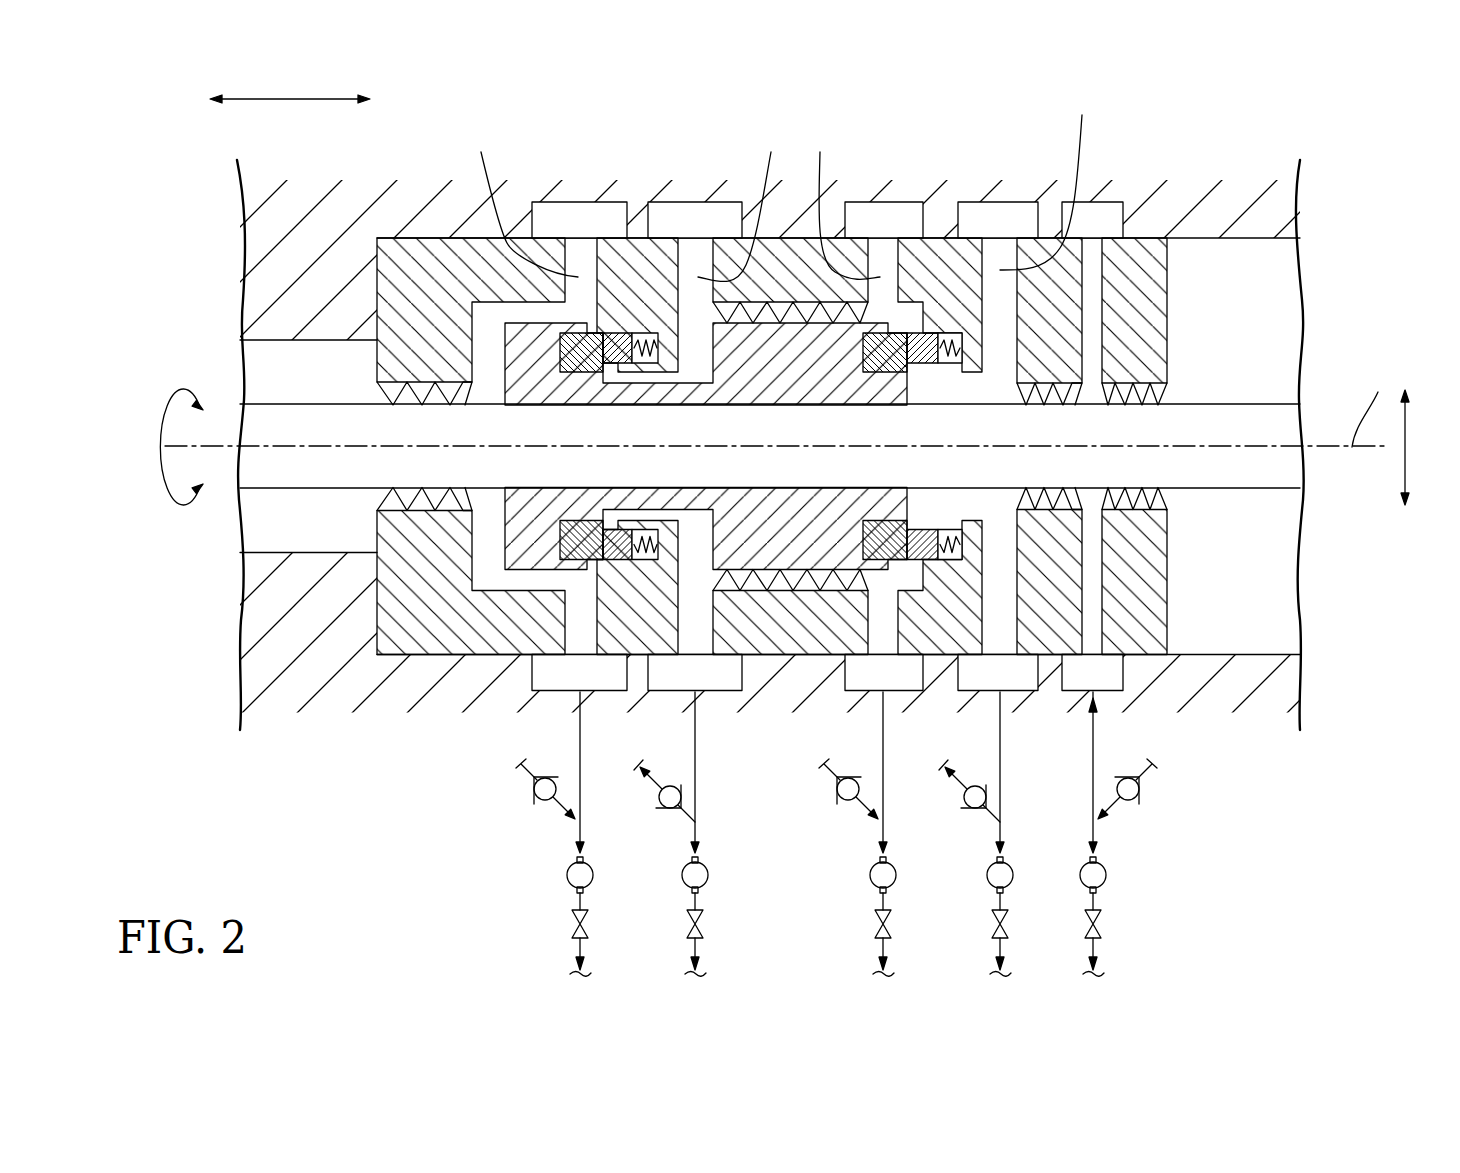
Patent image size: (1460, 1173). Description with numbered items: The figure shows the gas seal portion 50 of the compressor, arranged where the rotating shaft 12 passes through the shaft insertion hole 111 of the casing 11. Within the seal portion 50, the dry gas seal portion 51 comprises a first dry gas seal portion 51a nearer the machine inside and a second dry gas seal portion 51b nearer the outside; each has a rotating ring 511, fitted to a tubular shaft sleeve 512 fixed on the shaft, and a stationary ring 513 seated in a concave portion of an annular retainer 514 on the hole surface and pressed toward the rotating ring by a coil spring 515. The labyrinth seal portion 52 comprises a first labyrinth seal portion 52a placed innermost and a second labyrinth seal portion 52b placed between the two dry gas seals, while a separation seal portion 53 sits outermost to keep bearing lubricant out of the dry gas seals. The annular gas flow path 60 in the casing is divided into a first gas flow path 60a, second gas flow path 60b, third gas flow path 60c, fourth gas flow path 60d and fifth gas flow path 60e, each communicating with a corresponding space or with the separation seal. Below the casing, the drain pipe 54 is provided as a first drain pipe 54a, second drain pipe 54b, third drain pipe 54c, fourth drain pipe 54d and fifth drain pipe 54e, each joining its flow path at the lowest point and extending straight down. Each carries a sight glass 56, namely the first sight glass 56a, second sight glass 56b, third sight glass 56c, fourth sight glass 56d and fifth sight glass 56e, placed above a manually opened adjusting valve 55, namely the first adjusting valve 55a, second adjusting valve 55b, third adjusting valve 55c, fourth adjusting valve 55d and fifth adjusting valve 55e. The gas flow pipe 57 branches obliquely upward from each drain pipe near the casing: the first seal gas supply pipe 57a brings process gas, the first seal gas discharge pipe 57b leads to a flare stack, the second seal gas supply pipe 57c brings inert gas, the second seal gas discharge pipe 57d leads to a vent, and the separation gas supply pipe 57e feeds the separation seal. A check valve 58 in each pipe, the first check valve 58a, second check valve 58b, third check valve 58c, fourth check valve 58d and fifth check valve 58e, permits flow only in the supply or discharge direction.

The seal portion 50 is at (767, 526).
The casing 11 is at (823, 423).
The shaft insertion hole 111 is at (1245, 238).
The rotating shaft 12 is at (1275, 427).
The dry gas seal portion 51 is at (767, 372).
The first dry gas seal portion 51a is at (494, 372).
The second dry gas seal portion 51b is at (908, 568).
The rotating ring 511 is at (520, 332).
The shaft sleeve 512 is at (575, 352).
The stationary ring 513 is at (615, 345).
The retainer 514 is at (638, 257).
The coil spring 515 is at (668, 340).
The labyrinth seal portion 52 is at (767, 446).
The first labyrinth seal portion 52a is at (373, 502).
The second labyrinth seal portion 52b is at (872, 585).
The separation seal portion 53 is at (1175, 503).
The drain pipe 54 is at (835, 834).
The first drain pipe 54a is at (580, 738).
The second drain pipe 54b is at (695, 742).
The third drain pipe 54c is at (883, 753).
The fourth drain pipe 54d is at (1000, 738).
The fifth drain pipe 54e is at (1097, 740).
The adjusting valve 55 is at (835, 940).
The first adjusting valve 55a is at (572, 925).
The second adjusting valve 55b is at (704, 928).
The third adjusting valve 55c is at (892, 927).
The fourth adjusting valve 55d is at (1009, 928).
The fifth adjusting valve 55e is at (1102, 927).
The sight glass 56 is at (835, 882).
The first sight glass 56a is at (567, 875).
The second sight glass 56b is at (708, 875).
The third sight glass 56c is at (870, 882).
The fourth sight glass 56d is at (1013, 875).
The fifth sight glass 56e is at (1106, 875).
The gas flow pipe 57 is at (834, 799).
The first seal gas supply pipe 57a is at (520, 775).
The first seal gas discharge pipe 57b is at (656, 782).
The second seal gas supply pipe 57c is at (837, 778).
The second seal gas discharge pipe 57d is at (956, 782).
The separation gas supply pipe 57e is at (1150, 780).
The check valve 58 is at (831, 845).
The first check valve 58a is at (533, 805).
The second check valve 58b is at (662, 810).
The third check valve 58c is at (846, 805).
The fourth check valve 58d is at (965, 812).
The fifth check valve 58e is at (1140, 808).
The gas flow path 60 is at (853, 378).
The first gas flow path 60a is at (531, 218).
The second gas flow path 60b is at (730, 218).
The third gas flow path 60c is at (914, 218).
The fourth gas flow path 60d is at (971, 216).
The fifth gas flow path 60e is at (1108, 216).